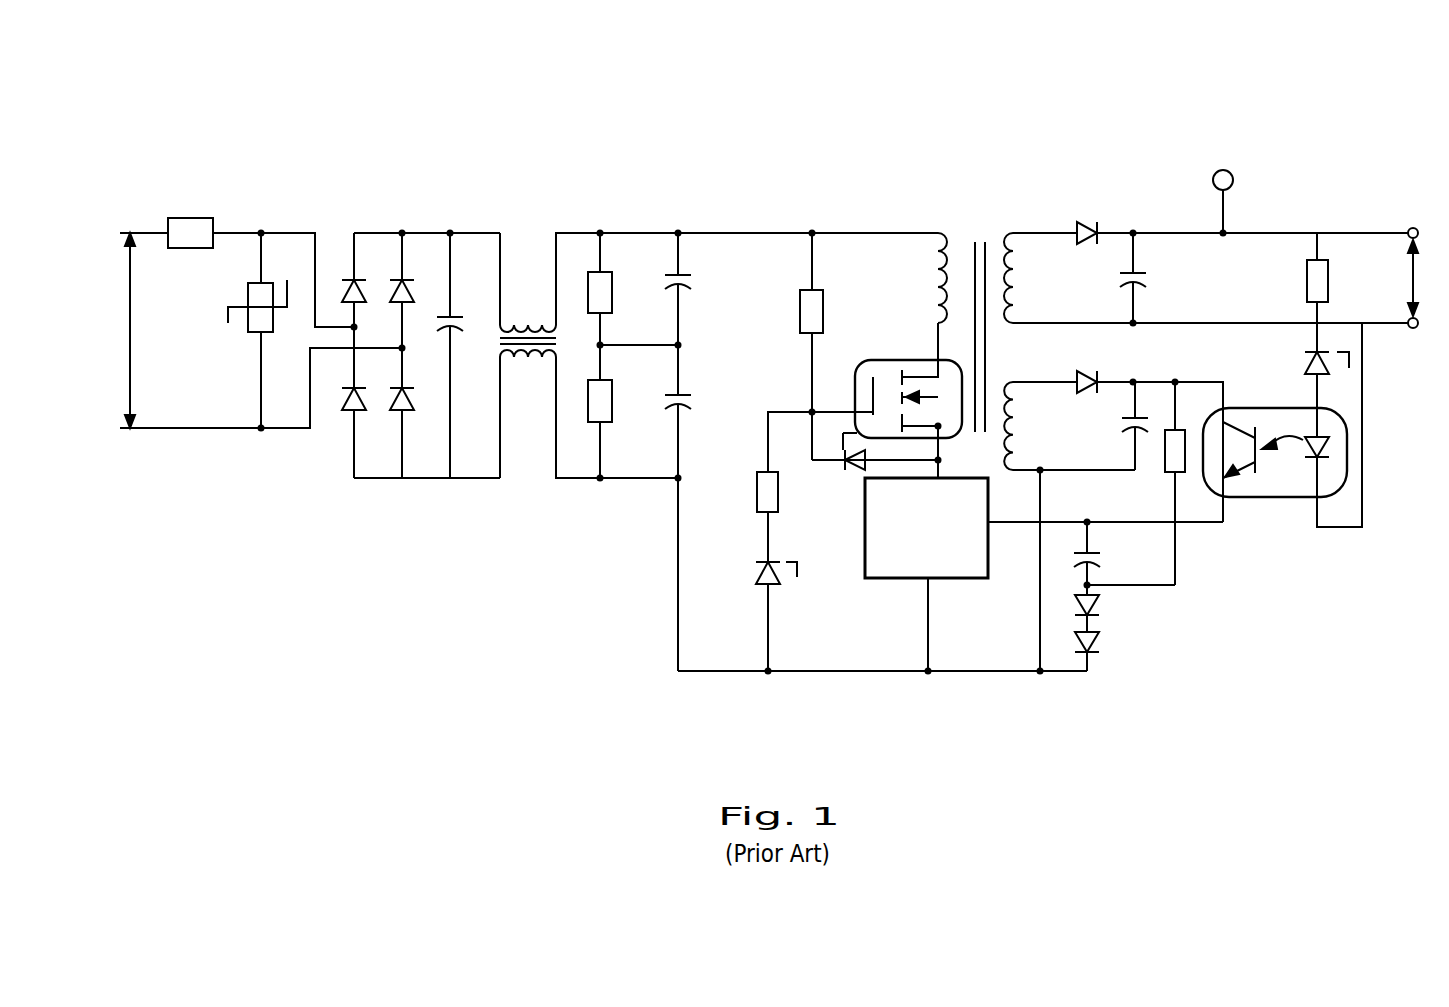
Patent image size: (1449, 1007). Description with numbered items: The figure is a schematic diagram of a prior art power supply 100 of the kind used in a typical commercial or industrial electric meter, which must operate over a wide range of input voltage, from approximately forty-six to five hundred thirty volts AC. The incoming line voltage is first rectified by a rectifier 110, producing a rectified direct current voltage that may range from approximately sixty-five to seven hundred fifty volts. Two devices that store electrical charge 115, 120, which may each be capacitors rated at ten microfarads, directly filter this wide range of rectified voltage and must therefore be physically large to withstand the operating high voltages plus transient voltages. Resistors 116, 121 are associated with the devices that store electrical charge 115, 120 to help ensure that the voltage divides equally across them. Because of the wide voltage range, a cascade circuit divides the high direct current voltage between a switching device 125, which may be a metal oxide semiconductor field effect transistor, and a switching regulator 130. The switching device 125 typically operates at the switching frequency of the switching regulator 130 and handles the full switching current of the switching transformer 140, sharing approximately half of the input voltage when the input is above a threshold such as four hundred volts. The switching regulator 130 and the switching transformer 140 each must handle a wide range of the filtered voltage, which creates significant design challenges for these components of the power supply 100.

The power supply 100 is at (1230, 108).
The rectifier 110 is at (384, 222).
The device that stores electrical charge 115 is at (687, 268).
The resistor 116 is at (595, 275).
The device that stores electrical charge 120 is at (687, 392).
The resistor 121 is at (605, 395).
The switching device 125 is at (923, 372).
The switching regulator 130 is at (895, 568).
The switching transformer 140 is at (1047, 478).